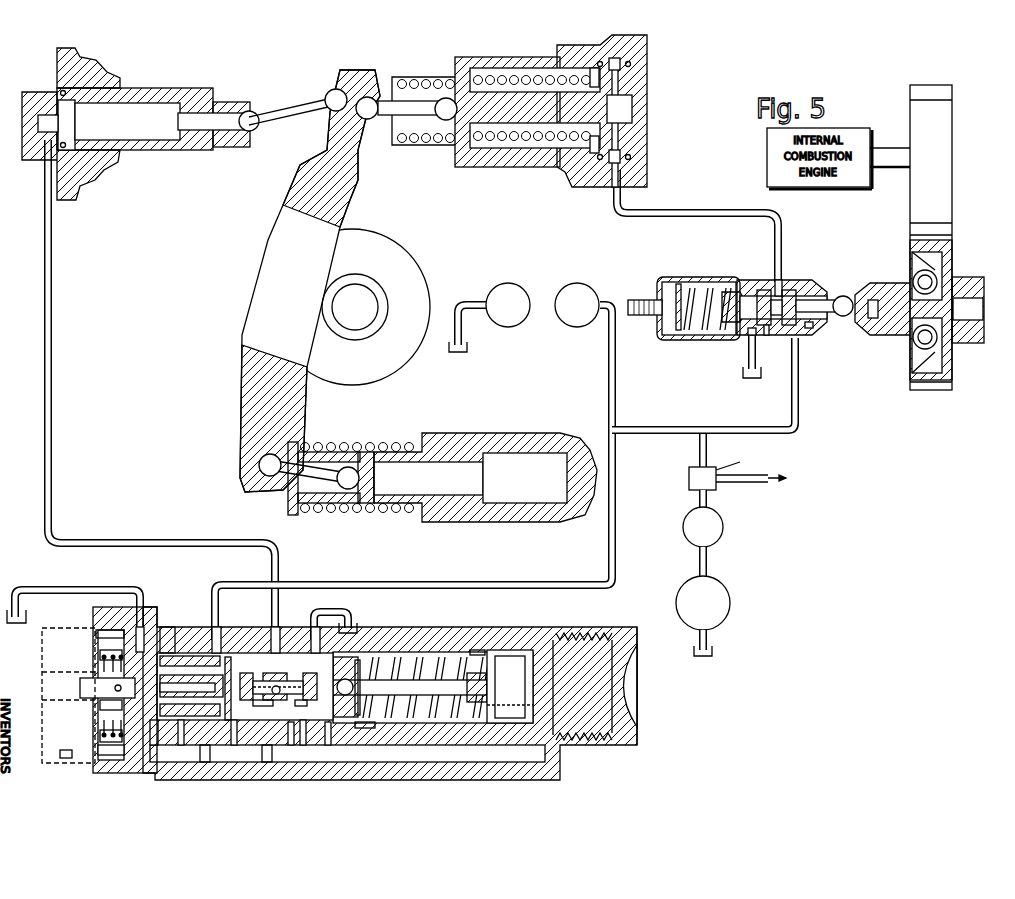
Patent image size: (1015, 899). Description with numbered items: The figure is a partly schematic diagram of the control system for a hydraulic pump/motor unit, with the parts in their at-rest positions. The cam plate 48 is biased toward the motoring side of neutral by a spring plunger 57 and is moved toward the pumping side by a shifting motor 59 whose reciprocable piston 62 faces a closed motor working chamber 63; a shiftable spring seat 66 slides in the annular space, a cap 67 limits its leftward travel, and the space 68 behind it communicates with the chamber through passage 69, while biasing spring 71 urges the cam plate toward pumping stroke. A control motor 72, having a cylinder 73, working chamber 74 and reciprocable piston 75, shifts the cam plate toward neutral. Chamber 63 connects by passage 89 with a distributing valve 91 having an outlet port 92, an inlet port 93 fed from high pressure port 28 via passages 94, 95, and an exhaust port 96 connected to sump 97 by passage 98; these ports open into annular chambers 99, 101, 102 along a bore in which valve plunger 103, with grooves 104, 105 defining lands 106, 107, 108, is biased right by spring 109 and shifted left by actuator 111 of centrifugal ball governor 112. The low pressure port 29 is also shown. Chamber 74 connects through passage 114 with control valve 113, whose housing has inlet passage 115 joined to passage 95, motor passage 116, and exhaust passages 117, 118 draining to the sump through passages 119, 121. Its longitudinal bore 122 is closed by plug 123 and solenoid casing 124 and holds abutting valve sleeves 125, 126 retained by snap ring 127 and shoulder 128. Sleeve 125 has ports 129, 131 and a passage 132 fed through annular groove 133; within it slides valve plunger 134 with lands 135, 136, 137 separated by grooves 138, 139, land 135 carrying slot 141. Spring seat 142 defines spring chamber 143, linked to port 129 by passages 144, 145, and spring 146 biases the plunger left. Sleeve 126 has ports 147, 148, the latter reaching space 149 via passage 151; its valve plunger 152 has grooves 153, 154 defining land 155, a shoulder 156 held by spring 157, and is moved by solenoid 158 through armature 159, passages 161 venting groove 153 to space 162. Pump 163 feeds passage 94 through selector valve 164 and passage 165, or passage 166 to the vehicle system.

The high pressure port 28 is at (579, 283).
The low pressure port 29 is at (509, 283).
The cam plate 48 is at (242, 388).
The spring plunger 57 is at (392, 442).
The shifting motor 59 is at (518, 66).
The reciprocable piston 62 is at (438, 146).
The motor working chamber 63 is at (634, 110).
The shiftable spring seat 66 is at (553, 148).
The cap 67 is at (463, 167).
The space 68 is at (605, 170).
The passage 69 is at (648, 60).
The biasing spring 71 is at (410, 78).
The control motor 72 is at (143, 88).
The cylinder 73 is at (152, 165).
The working chamber 74 is at (127, 131).
The reciprocable piston 75 is at (224, 148).
The passage 89 is at (690, 213).
The distributing valve 91 is at (825, 333).
The outlet port 92 is at (791, 289).
The inlet port 93 is at (800, 355).
The passage 94 is at (652, 436).
The passage 95 is at (608, 392).
The exhaust port 96 is at (766, 336).
The sump 97 is at (742, 381).
The passage 98 is at (746, 361).
The annular chamber 99 is at (765, 288).
The annular chamber 101 is at (798, 288).
The annular chamber 102 is at (735, 282).
The valve plunger 103 is at (838, 318).
The annular groove 104 is at (776, 282).
The annular groove 105 is at (812, 330).
The annular valve land 106 is at (698, 341).
The annular valve land 107 is at (752, 350).
The annular valve land 108 is at (848, 298).
The spring 109 is at (700, 285).
The actuator 111 is at (865, 333).
The centrifugal ball governor 112 is at (955, 264).
The control valve 113 is at (568, 748).
The passage 114 is at (50, 312).
The inlet passage 115 is at (197, 630).
The motor passage 116 is at (270, 622).
The exhaust passage 117 is at (312, 627).
The exhaust passage 118 is at (125, 690).
The passage 119 is at (346, 612).
The passage 121 is at (50, 590).
The longitudinal bore 122 is at (478, 652).
The plug 123 is at (640, 709).
The solenoid casing 124 is at (42, 678).
The valve sleeve 125 is at (364, 732).
The valve sleeve 126 is at (205, 752).
The snap ring 127 is at (108, 741).
The shoulder 128 is at (267, 752).
The port 129 is at (292, 733).
The port 131 is at (284, 659).
The passage 132 is at (237, 741).
The annular groove 133 is at (226, 655).
The valve plunger 134 is at (358, 668).
The annular land 135 is at (272, 669).
The annular land 136 is at (270, 712).
The annular land 137 is at (331, 733).
The annular groove 138 is at (297, 741).
The annular groove 139 is at (308, 712).
The longitudinal slot 141 is at (248, 661).
The spring seat 142 is at (522, 650).
The spring chamber 143 is at (450, 665).
The longitudinal passage 144 is at (345, 657).
The radial passage 145 is at (278, 681).
The spring 146 is at (410, 655).
The port 147 is at (176, 627).
The port 148 is at (172, 741).
The space 149 is at (552, 642).
The passage 151 is at (493, 765).
The valve plunger 152 is at (198, 708).
The annular groove 153 is at (140, 732).
The annular groove 154 is at (190, 723).
The annular valve land 155 is at (184, 638).
The shoulder 156 is at (98, 718).
The spring 157 is at (98, 667).
The solenoid 158 is at (60, 758).
The armature 159 is at (98, 702).
The passages 161 is at (95, 688).
The space 162 is at (96, 640).
The pump 163 is at (678, 596).
The selector valve 164 is at (688, 482).
The passage 165 is at (710, 560).
The passage 166 is at (752, 485).